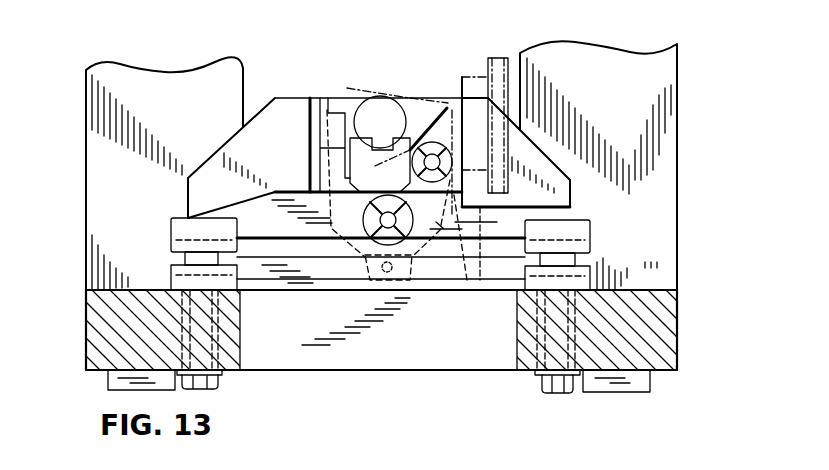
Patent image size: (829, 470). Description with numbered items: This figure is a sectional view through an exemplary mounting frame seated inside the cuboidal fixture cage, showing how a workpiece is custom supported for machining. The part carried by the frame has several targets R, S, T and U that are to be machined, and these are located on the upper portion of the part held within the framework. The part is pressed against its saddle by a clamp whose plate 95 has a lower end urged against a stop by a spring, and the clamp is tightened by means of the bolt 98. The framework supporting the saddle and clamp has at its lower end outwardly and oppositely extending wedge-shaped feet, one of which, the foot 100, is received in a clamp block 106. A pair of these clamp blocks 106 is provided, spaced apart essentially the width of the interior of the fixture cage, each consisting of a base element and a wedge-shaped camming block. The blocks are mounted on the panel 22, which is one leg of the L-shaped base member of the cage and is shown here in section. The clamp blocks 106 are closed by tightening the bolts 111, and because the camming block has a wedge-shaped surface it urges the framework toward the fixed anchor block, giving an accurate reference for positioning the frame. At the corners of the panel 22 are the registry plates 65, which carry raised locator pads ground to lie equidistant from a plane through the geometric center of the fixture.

The panel 22 is at (472, 369).
The registry plate 65 is at (652, 383).
The plate 95 is at (468, 280).
The bolt 98 is at (432, 143).
The wedge-shaped foot 100 is at (323, 265).
The clamp block 106 is at (182, 230).
The bolt 111 is at (545, 392).
The target S is at (350, 82).
The target R is at (380, 110).
The target T is at (326, 109).
The target U is at (489, 57).